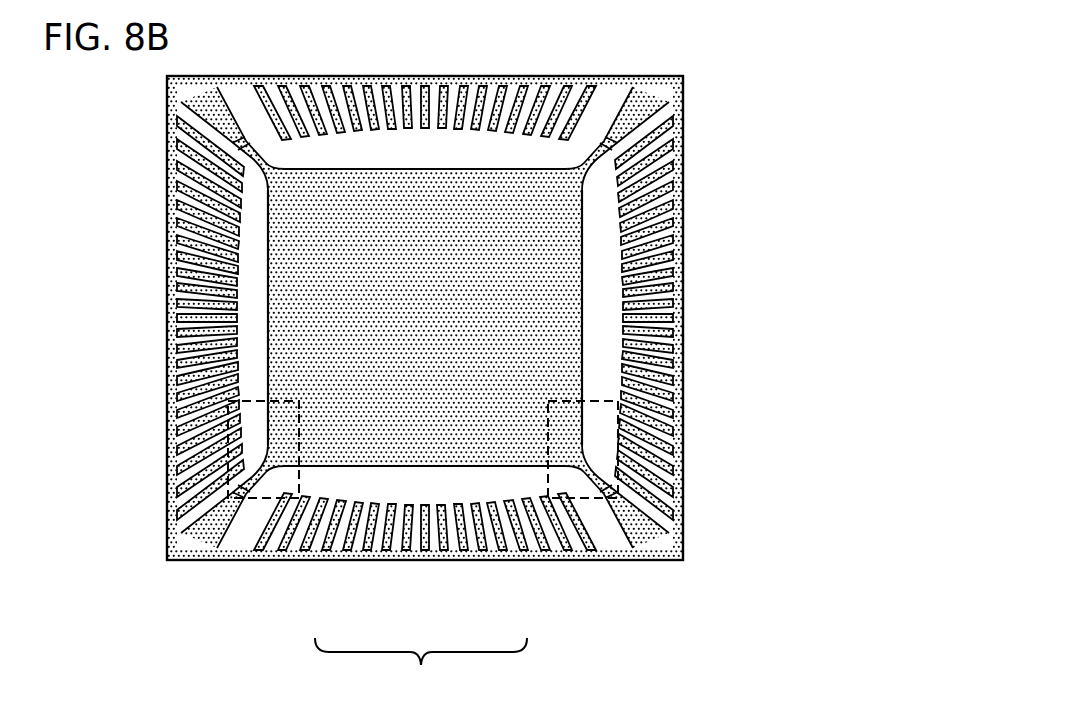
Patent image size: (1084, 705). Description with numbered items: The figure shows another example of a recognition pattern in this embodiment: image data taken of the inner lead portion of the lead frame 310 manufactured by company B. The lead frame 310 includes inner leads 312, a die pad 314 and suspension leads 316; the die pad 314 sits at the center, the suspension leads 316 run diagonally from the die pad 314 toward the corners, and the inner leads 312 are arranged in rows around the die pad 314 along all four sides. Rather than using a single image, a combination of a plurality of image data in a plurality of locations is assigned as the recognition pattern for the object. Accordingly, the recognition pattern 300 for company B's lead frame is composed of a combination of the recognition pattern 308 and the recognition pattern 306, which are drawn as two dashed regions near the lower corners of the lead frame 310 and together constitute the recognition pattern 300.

The recognition pattern 300 is at (421, 669).
The recognition pattern 306 is at (637, 373).
The recognition pattern 308 is at (257, 498).
The lead frame 310 is at (727, 432).
The inner leads 312 is at (653, 322).
The die pad 314 is at (567, 287).
The suspension leads 316 is at (643, 112).